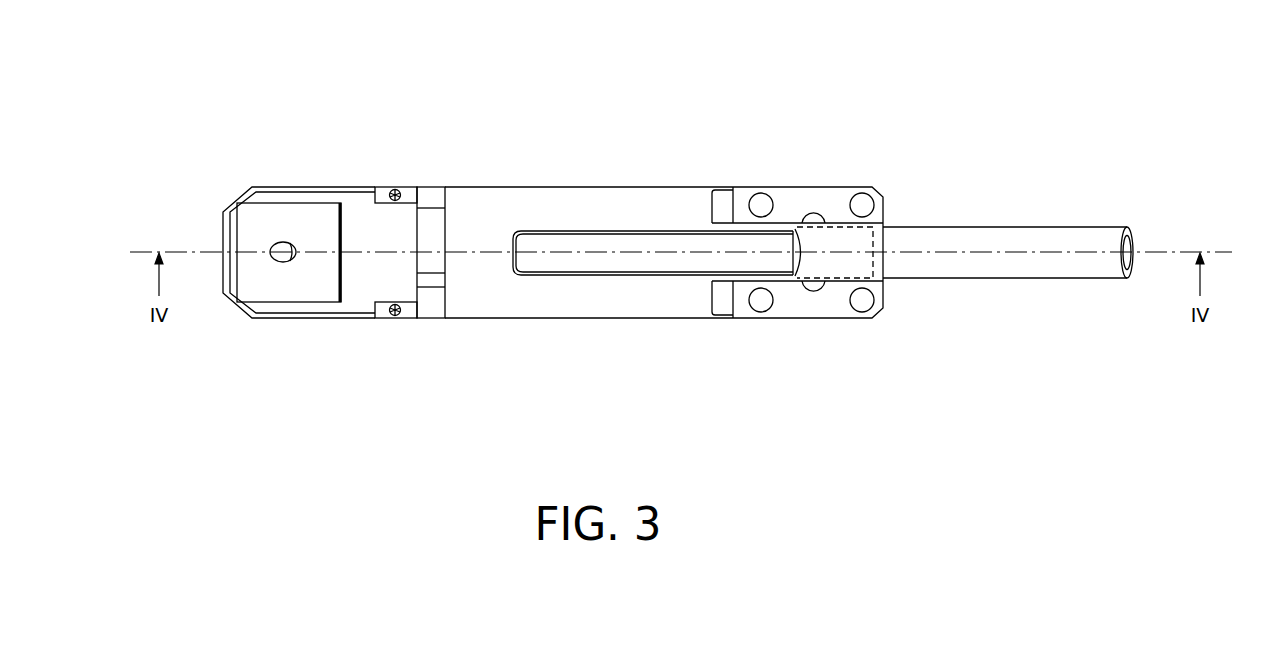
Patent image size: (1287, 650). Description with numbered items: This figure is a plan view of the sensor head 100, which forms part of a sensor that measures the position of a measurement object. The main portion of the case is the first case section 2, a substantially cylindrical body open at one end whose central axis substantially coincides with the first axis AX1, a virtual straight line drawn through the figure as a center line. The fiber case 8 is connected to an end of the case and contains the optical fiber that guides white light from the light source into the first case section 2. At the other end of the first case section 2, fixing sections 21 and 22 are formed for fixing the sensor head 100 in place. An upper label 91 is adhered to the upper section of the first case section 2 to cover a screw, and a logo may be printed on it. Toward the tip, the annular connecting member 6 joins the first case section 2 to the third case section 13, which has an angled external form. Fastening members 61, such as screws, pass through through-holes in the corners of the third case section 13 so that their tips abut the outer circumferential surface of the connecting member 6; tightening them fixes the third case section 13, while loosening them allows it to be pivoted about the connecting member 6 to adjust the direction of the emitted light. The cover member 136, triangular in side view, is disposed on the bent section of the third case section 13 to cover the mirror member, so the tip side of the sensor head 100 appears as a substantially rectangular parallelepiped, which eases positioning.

The sensor head 100 is at (688, 131).
The first case section 2 is at (527, 320).
The cover member 136 is at (286, 216).
The third case section 13 is at (357, 290).
The fastening members 61 is at (397, 188).
The connecting member 6 is at (431, 232).
The upper label 91 is at (557, 242).
The fixing section 22 is at (817, 187).
The fixing section 21 is at (831, 320).
The fiber case 8 is at (1027, 227).
The first axis AX1 is at (1178, 252).